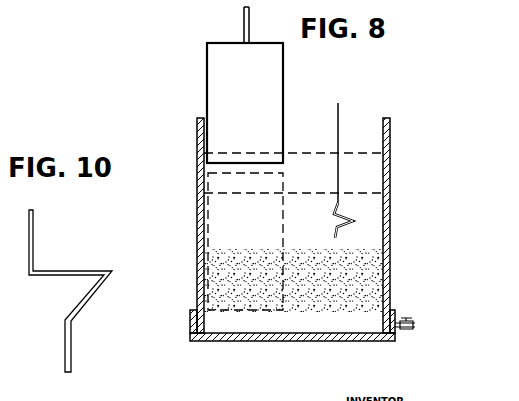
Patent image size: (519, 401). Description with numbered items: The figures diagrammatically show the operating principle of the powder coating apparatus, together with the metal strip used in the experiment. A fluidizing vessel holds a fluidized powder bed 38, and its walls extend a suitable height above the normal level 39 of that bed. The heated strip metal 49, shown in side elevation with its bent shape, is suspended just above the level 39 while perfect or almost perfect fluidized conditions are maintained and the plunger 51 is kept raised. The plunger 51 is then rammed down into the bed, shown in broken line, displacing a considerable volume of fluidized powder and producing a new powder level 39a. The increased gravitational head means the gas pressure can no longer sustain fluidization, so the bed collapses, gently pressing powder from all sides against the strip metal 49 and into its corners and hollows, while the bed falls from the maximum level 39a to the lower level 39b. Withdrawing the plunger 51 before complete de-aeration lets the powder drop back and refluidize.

The plunger 51 is at (278, 68).
The normal level 39 is at (367, 250).
The new powder level 39a is at (362, 153).
The lower level 39b is at (355, 193).
The fluidized powder bed 38 is at (360, 276).
The strip metal 49 is at (335, 207).